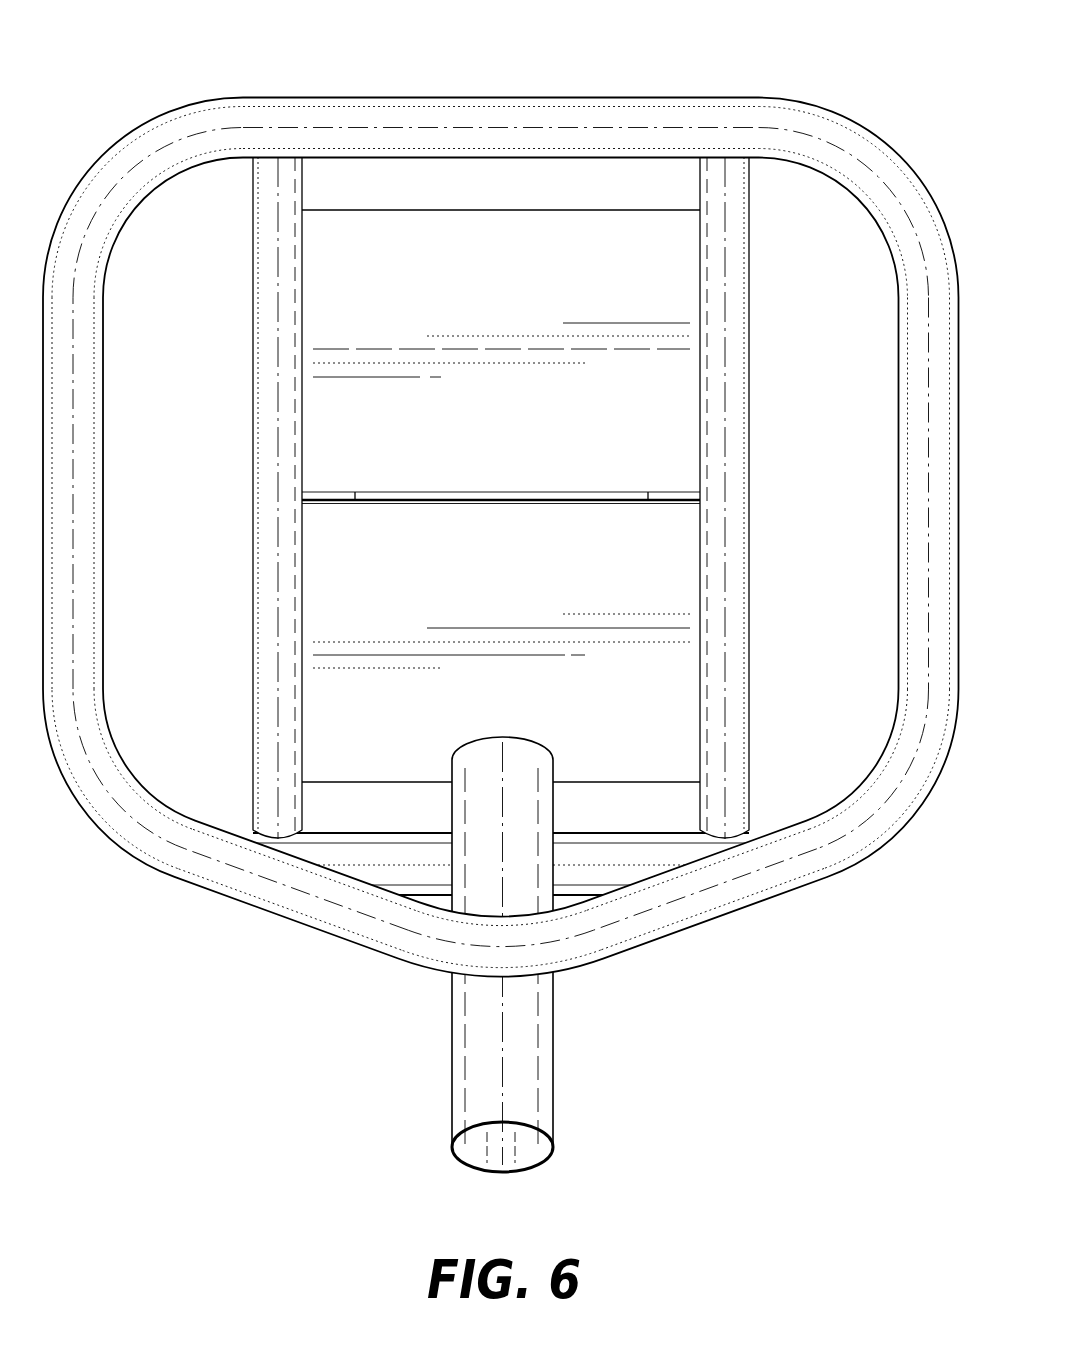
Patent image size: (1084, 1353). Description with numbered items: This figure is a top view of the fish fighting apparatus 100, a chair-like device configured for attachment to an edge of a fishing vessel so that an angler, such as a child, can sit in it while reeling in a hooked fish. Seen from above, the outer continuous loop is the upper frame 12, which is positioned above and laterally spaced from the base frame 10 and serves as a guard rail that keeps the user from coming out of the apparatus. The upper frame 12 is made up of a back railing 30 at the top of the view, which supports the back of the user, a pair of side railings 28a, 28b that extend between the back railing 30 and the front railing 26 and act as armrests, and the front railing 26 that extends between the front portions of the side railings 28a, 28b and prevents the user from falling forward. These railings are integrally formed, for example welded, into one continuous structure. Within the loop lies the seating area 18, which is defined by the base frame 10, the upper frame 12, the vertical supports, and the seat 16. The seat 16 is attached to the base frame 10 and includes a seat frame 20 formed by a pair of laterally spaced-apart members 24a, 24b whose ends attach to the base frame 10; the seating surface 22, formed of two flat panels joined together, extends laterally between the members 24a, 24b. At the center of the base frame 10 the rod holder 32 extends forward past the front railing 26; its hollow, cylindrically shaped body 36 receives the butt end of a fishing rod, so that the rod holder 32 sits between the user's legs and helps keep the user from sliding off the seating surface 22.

The fish fighting apparatus 100 is at (100, 78).
The base frame 10 is at (593, 880).
The upper frame 12 is at (397, 113).
The seat 16 is at (617, 186).
The seating area 18 is at (836, 254).
The seat frame 20 is at (738, 438).
The seating surface 22 is at (695, 540).
The member 24a is at (270, 312).
The member 24b is at (738, 330).
The front railing 26 is at (695, 905).
The side railing 28a is at (92, 625).
The side railing 28b is at (913, 672).
The back railing 30 is at (500, 113).
The rod holder 32 is at (553, 1093).
The cylindrically shaped body 36 is at (478, 1024).